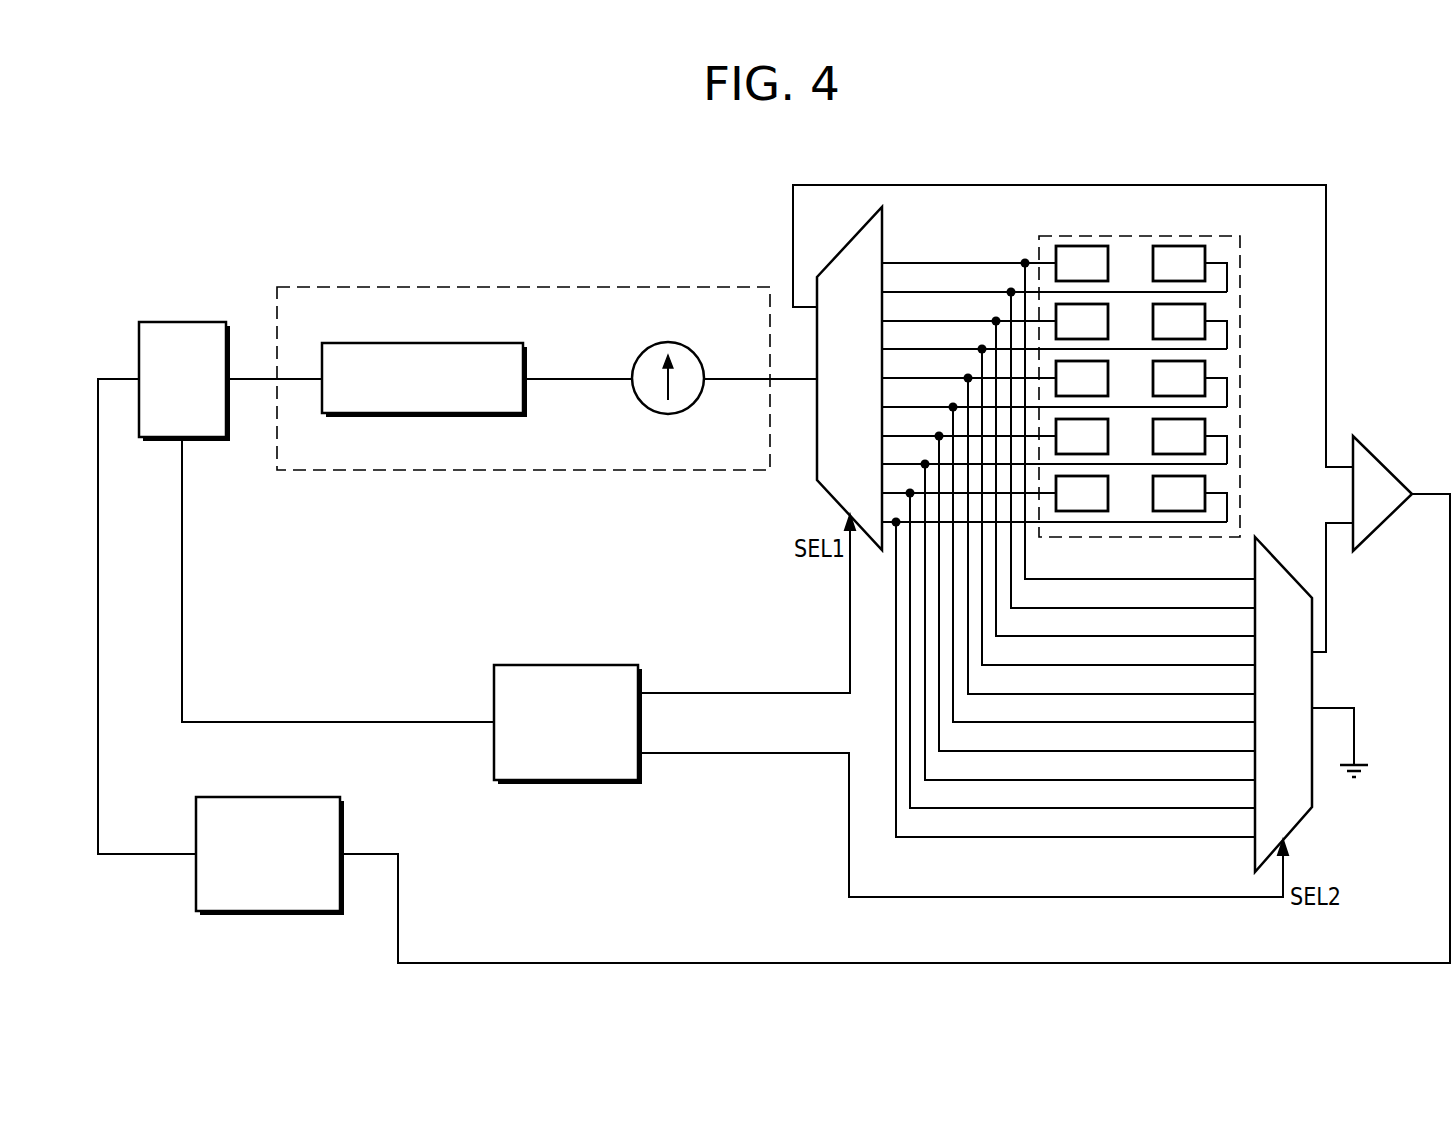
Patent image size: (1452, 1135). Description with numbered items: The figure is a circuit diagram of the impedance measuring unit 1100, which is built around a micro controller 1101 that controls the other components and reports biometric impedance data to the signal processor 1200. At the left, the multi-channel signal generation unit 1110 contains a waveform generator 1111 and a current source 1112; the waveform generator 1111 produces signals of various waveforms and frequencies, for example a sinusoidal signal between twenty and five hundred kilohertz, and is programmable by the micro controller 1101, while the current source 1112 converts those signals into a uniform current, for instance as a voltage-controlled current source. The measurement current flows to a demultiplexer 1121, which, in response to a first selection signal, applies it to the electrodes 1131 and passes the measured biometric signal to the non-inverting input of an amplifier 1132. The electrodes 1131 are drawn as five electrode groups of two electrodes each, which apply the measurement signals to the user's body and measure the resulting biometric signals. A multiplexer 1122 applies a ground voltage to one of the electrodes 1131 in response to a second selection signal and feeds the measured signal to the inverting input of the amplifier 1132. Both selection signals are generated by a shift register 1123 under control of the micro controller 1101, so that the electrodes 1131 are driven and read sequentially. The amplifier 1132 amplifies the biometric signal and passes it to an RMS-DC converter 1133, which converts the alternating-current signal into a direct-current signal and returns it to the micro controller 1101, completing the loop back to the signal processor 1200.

The impedance measuring unit 1100 is at (1338, 170).
The micro controller 1101 is at (205, 440).
The multi-channel signal generation unit 1110 is at (628, 287).
The waveform generator 1111 is at (410, 417).
The current source 1112 is at (665, 415).
The demultiplexer 1121 is at (882, 237).
The multiplexer 1122 is at (1312, 680).
The shift register 1123 is at (592, 663).
The electrodes 1131 is at (1173, 236).
The amplifier 1132 is at (1378, 460).
The RMS-DC converter 1133 is at (305, 797).
The signal processor 1200 is at (182, 322).